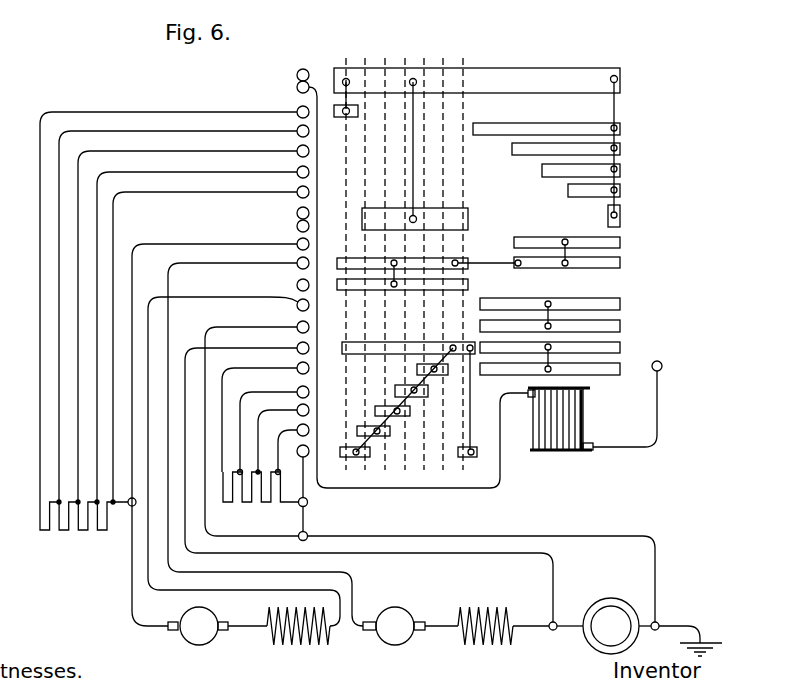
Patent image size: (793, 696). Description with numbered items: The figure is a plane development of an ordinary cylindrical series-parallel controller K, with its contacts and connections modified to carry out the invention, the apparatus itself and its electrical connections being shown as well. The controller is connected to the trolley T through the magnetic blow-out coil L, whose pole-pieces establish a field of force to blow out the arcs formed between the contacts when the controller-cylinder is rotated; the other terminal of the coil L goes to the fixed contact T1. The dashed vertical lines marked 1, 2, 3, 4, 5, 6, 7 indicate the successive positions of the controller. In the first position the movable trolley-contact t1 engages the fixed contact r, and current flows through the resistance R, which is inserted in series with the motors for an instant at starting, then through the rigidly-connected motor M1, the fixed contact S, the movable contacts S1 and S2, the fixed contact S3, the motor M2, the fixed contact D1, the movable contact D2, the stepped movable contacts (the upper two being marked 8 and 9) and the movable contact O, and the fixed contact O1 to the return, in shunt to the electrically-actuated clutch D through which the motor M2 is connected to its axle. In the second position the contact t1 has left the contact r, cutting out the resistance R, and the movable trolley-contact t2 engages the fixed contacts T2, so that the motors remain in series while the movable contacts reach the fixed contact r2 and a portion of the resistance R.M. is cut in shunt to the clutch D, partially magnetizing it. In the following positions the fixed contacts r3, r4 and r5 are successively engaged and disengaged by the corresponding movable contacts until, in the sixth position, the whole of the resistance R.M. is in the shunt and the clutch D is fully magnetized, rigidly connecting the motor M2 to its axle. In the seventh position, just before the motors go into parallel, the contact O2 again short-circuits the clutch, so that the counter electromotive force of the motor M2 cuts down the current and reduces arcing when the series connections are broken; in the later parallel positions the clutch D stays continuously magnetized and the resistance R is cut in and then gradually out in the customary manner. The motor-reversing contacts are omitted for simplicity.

The first controller position 1 is at (345, 263).
The second controller position 2 is at (364, 263).
The third controller position 3 is at (384, 263).
The fourth controller position 4 is at (404, 263).
The fifth controller position 5 is at (423, 263).
The sixth controller position 6 is at (359, 421).
The seventh controller position 7 is at (379, 400).
The movable contact r⁸ 8 is at (398, 379).
The movable contact r⁹ 9 is at (452, 369).
The fixed contact T' T1 is at (297, 82).
The fixed contacts T² T2 is at (297, 222).
The trolley T is at (662, 364).
The fixed contact r is at (298, 112).
The fixed contact r² r2 is at (299, 430).
The fixed contact r³ r3 is at (299, 409).
The fixed contact r⁴ r4 is at (299, 391).
The fixed contact r⁵ r5 is at (299, 367).
The movable trolley-contact t' t1 is at (340, 101).
The movable trolley-contact t² t2 is at (362, 219).
The series-parallel controller K is at (477, 221).
The fixed contact S is at (306, 290).
The movable contact S' S1 is at (337, 285).
The movable contact S² S2 is at (337, 264).
The fixed contact S³ S3 is at (308, 260).
The fixed contact D' D1 is at (308, 345).
The movable contact D² D2 is at (342, 349).
The movable contact O is at (340, 452).
The fixed contact O' O1 is at (297, 451).
The contact O² O2 is at (478, 451).
The magnetic blow-out coil L is at (572, 424).
The resistance R is at (66, 518).
The resistance R M R.M. is at (278, 494).
The motor M' M1 is at (197, 632).
The motor M² M2 is at (395, 632).
The electrically-actuated clutch D is at (609, 633).